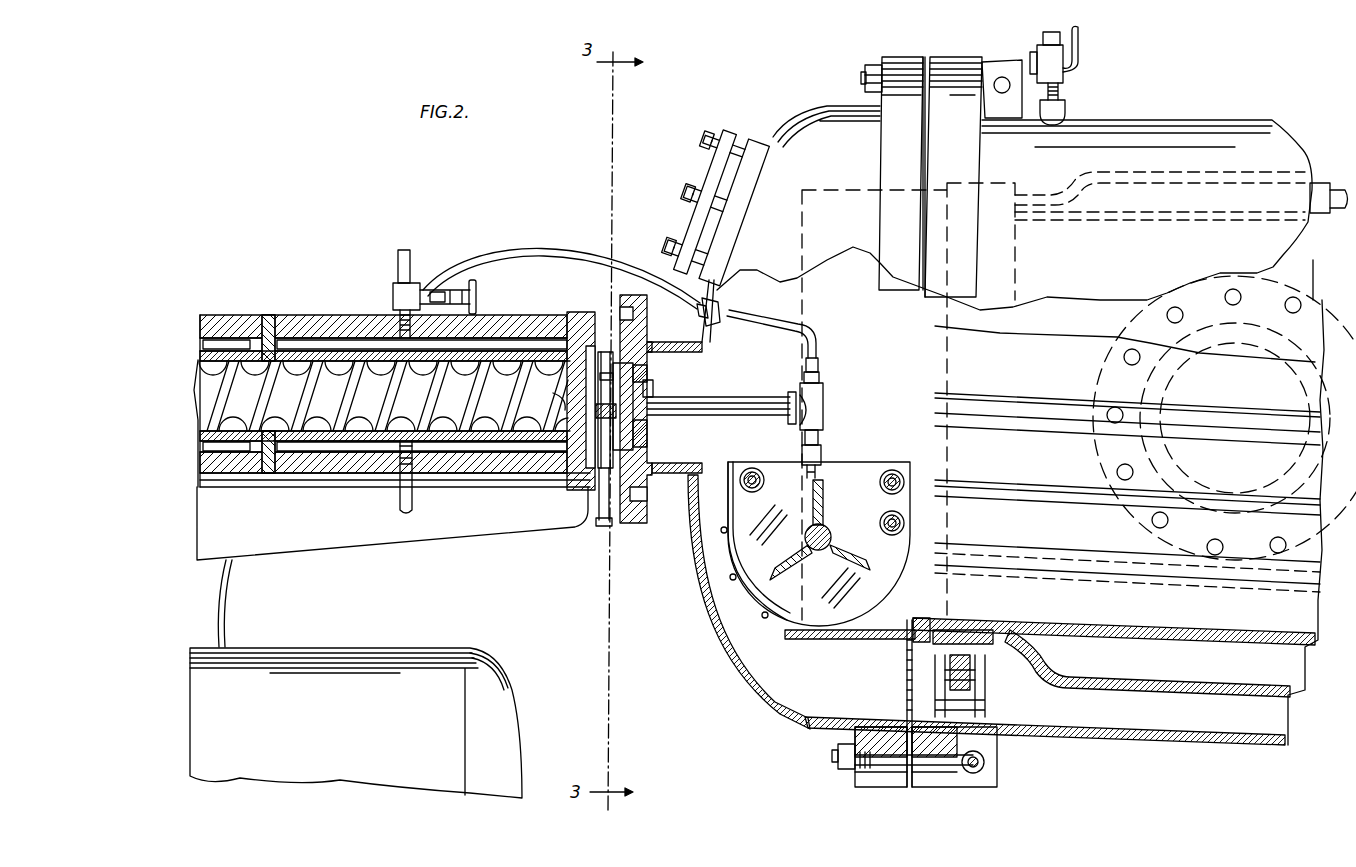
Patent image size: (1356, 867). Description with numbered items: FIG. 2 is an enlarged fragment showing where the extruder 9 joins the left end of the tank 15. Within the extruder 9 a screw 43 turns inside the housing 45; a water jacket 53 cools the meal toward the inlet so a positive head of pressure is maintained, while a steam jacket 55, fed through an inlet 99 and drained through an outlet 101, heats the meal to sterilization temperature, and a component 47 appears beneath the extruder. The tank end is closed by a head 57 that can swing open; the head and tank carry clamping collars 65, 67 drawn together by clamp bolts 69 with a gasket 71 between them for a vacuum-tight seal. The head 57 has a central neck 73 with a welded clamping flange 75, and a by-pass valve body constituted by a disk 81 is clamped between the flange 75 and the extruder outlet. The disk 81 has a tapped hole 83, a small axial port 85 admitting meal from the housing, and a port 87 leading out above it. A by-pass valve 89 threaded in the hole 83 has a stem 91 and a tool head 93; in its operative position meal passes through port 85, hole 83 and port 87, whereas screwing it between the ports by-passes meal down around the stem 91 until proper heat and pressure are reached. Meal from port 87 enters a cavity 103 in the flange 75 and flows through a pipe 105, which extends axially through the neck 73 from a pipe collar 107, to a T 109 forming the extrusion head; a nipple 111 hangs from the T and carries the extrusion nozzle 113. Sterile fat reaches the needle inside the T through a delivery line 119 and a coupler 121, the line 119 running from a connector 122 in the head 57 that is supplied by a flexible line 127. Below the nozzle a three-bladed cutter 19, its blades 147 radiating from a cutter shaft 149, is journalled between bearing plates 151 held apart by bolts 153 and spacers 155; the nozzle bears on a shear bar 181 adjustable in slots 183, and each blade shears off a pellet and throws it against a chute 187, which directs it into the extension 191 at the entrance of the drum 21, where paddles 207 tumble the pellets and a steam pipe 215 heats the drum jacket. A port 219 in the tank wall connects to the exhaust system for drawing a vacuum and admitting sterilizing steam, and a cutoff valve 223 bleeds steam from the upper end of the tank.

The extruder 9 is at (191, 316).
The tank 15 is at (1170, 735).
The cutter 19 is at (811, 575).
The drum 21 is at (1274, 643).
The screw 43 is at (205, 392).
The barrel 45 is at (254, 316).
The hopper tank 47 is at (472, 662).
The water jacket 53 is at (207, 340).
The steam jacket 55 is at (330, 344).
The head 57 is at (733, 667).
The clamping collar 65 is at (902, 57).
The clamping collar 67 is at (960, 57).
The clamp bolts 69 is at (864, 80).
The gasket 71 is at (922, 116).
The central neck 73 is at (690, 474).
The clamping flange 75 is at (626, 300).
The disk 81 is at (600, 330).
The tapped hole 83 is at (642, 437).
The axial port 85 is at (598, 398).
The port 87 is at (640, 374).
The by-pass valve 89 is at (598, 418).
The stem 91 is at (598, 498).
The head 93 is at (603, 522).
The inlet 99 is at (406, 266).
The outlet 101 is at (400, 498).
The cavity 103 is at (648, 424).
The pipe 105 is at (733, 400).
The pipe collar 107 is at (653, 388).
The T 109 is at (822, 403).
The nipple 111 is at (820, 437).
The extrusion nozzle 113 is at (804, 456).
The delivery line 119 is at (814, 345).
The coupler 121 is at (822, 368).
The connector 122 is at (720, 308).
The flexible line 127 is at (540, 250).
The blade 147 is at (826, 499).
The cutter shaft 149 is at (832, 534).
The bearing plates 151 is at (892, 466).
The bolts 153 is at (903, 485).
The spacers 155 is at (903, 482).
The shear bar 181 is at (800, 472).
The slots 183 is at (984, 688).
The guide plate or chute 187 is at (728, 537).
The extension 191 is at (840, 640).
The paddles 207 is at (1050, 393).
The pipe 215 is at (1333, 190).
The port 219 is at (1178, 364).
The cutoff valve 223 is at (1060, 66).